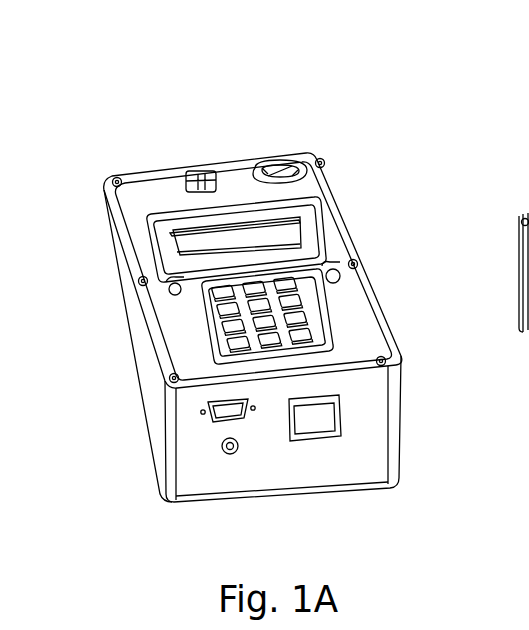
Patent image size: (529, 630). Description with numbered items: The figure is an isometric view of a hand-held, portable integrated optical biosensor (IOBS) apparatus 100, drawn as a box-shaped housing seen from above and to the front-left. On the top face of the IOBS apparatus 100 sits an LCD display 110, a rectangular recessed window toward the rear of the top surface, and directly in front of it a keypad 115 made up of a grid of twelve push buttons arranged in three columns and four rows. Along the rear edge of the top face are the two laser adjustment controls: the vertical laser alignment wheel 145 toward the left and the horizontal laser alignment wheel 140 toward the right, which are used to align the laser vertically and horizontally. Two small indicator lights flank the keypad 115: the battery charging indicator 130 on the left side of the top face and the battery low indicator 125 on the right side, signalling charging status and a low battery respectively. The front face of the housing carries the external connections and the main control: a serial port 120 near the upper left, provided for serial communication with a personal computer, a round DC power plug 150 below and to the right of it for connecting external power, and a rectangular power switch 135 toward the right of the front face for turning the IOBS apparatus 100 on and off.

The integrated optical biosensor (IOBS) apparatus 100 is at (130, 55).
The LCD display 110 is at (283, 240).
The keypad 115 is at (306, 322).
The serial RS-232 port 120 is at (213, 424).
The battery low indicator 125 is at (334, 270).
The battery charging indicator 130 is at (171, 293).
The power switch 135 is at (318, 428).
The horizontal laser alignment wheel 140 is at (288, 172).
The vertical laser alignment wheel 145 is at (202, 178).
The DC power plug 150 is at (233, 455).